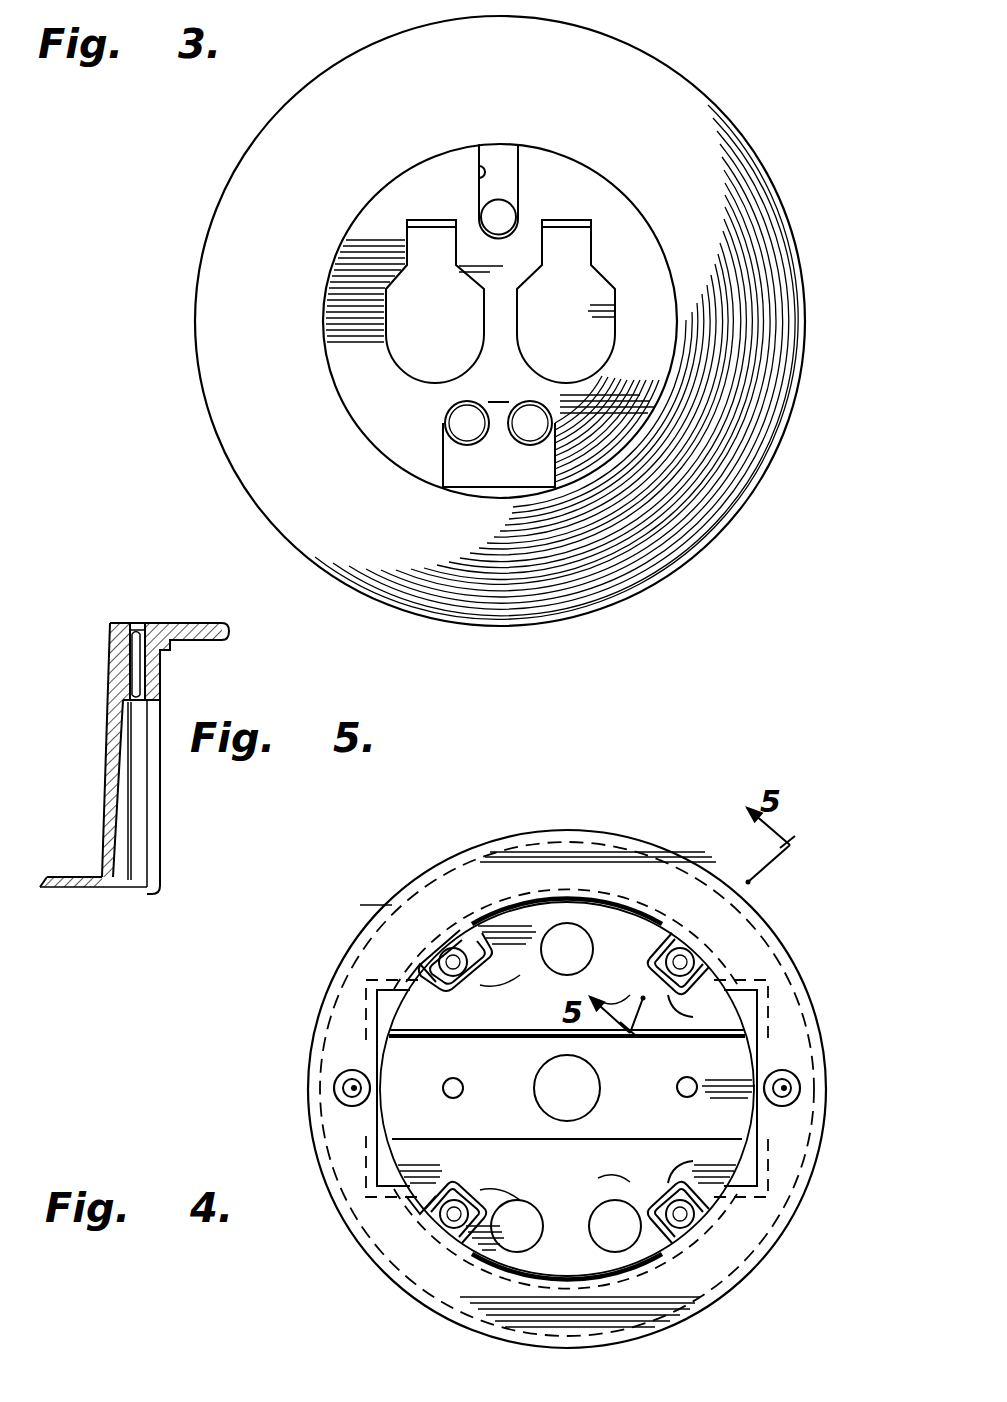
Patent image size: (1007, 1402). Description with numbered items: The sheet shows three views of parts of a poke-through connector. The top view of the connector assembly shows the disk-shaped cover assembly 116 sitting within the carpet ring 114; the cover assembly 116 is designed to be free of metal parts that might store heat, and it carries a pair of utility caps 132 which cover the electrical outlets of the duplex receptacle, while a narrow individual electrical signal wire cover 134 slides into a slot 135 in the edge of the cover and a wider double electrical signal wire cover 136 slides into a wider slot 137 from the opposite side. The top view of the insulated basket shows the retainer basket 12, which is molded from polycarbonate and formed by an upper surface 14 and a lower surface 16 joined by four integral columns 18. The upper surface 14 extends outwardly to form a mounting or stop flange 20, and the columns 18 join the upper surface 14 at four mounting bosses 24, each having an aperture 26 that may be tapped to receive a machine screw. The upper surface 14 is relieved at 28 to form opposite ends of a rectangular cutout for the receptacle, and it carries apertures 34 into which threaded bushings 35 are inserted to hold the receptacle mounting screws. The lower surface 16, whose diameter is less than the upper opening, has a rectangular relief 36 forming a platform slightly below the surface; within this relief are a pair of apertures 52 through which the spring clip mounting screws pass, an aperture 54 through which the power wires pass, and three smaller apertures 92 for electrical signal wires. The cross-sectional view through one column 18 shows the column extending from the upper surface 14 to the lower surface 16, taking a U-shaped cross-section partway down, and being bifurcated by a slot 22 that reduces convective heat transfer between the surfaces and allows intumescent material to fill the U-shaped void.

In FIG. 4, the insulated retainer basket 12 is at (345, 1207).
In FIG. 5, the upper surface 14 is at (165, 623).
In FIG. 4, the upper surface 14 is at (463, 868).
In FIG. 5, the lower surface 16 is at (95, 888).
In FIG. 4, the lower surface 16 is at (567, 1086).
In FIG. 5, the column 18 is at (110, 724).
In FIG. 4, the column 18 is at (410, 977).
In FIG. 5, the mounting or stop flange 20 is at (216, 638).
In FIG. 4, the mounting or stop flange 20 is at (368, 910).
In FIG. 5, the slot 22 is at (108, 815).
In FIG. 4, the slot 22 is at (648, 980).
In FIG. 5, the mounting boss 24 is at (110, 623).
In FIG. 4, the mounting boss 24 is at (500, 908).
In FIG. 5, the aperture 26 is at (137, 702).
In FIG. 4, the aperture 26 is at (443, 955).
In FIG. 4, the relieved area 28 is at (378, 1012).
In FIG. 4, the aperture 34 is at (333, 1086).
In FIG. 4, the threaded bushing 35 is at (342, 1102).
In FIG. 4, the relief 36 is at (567, 1084).
In FIG. 4, the aperture 52 is at (682, 1085).
In FIG. 4, the aperture 54 is at (567, 1118).
In FIG. 4, the aperture 92 is at (567, 935).
In FIG. 3, the carpet ring 114 is at (238, 200).
In FIG. 3, the cover assembly 116 is at (632, 238).
In FIG. 3, the utility cap 132 is at (397, 343).
In FIG. 3, the individual electrical signal wire cover 134 is at (505, 155).
In FIG. 3, the slot 135 is at (478, 173).
In FIG. 3, the double electrical signal wire cover 136 is at (522, 480).
In FIG. 3, the wider slot 137 is at (460, 490).